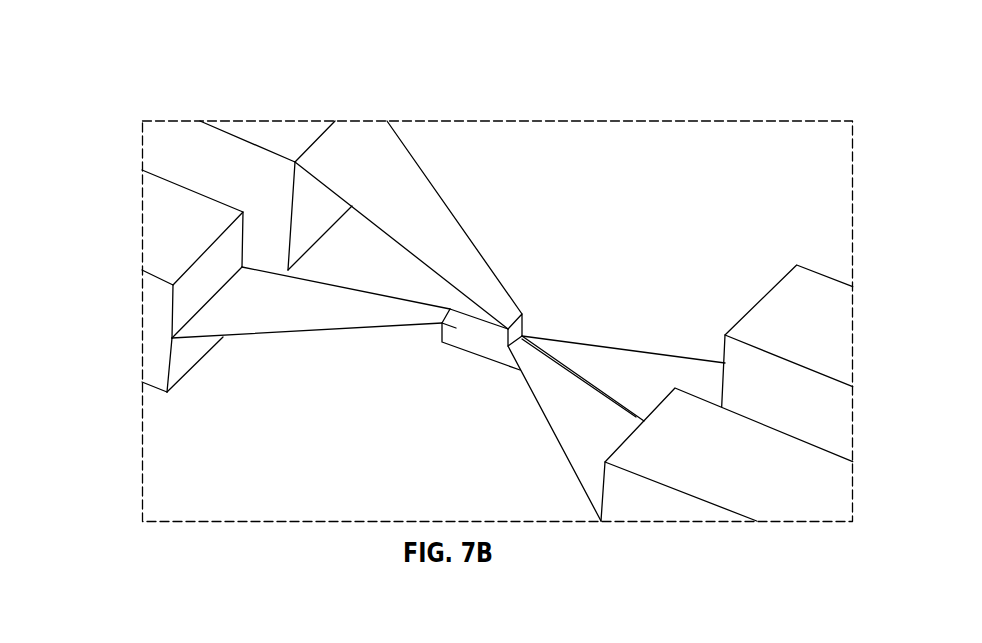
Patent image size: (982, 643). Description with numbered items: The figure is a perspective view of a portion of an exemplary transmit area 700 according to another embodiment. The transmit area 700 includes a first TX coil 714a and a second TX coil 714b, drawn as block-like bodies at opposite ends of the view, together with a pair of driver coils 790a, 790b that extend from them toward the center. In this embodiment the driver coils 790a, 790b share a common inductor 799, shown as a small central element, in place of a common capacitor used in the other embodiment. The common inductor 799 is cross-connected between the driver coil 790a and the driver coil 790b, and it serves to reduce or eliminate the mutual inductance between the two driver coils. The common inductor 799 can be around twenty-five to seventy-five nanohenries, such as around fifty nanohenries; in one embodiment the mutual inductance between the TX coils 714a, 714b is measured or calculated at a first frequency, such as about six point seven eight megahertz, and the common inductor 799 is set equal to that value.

The transmit area 700 is at (499, 263).
The first TX coil 714a is at (276, 165).
The second TX coil 714b is at (153, 281).
The driver coil 790a is at (322, 236).
The driver coil 790b is at (177, 385).
The common inductor 799 is at (462, 306).